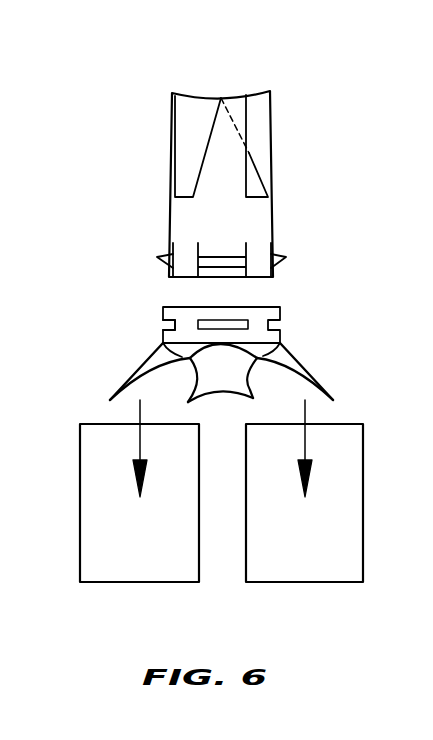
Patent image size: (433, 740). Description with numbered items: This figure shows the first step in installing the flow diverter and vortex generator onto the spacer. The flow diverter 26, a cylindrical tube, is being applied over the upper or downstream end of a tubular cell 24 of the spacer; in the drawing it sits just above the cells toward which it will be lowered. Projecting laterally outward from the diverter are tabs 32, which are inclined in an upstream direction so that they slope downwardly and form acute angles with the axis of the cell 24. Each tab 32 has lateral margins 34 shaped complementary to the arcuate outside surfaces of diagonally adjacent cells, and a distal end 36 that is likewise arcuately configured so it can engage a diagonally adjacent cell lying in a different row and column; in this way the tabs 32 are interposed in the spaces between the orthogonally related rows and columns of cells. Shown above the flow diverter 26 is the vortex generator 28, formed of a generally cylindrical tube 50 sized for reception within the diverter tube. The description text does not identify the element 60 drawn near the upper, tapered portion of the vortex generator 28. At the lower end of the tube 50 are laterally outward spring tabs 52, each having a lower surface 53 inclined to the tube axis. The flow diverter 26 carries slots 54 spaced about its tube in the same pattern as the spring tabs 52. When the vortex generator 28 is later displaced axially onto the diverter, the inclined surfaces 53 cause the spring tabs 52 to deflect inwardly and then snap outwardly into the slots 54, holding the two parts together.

The cell 24 is at (363, 503).
The flow diverter 26 is at (243, 328).
The vortex generator 28 is at (233, 161).
The tab 32 is at (137, 373).
The lateral margin 34 is at (250, 383).
The distal end 36 is at (218, 393).
The tube 50 is at (275, 227).
The spring tab 52 is at (163, 253).
The lower surface 53 is at (280, 258).
The slot 54 is at (165, 325).
The tapered window 60 is at (195, 103).